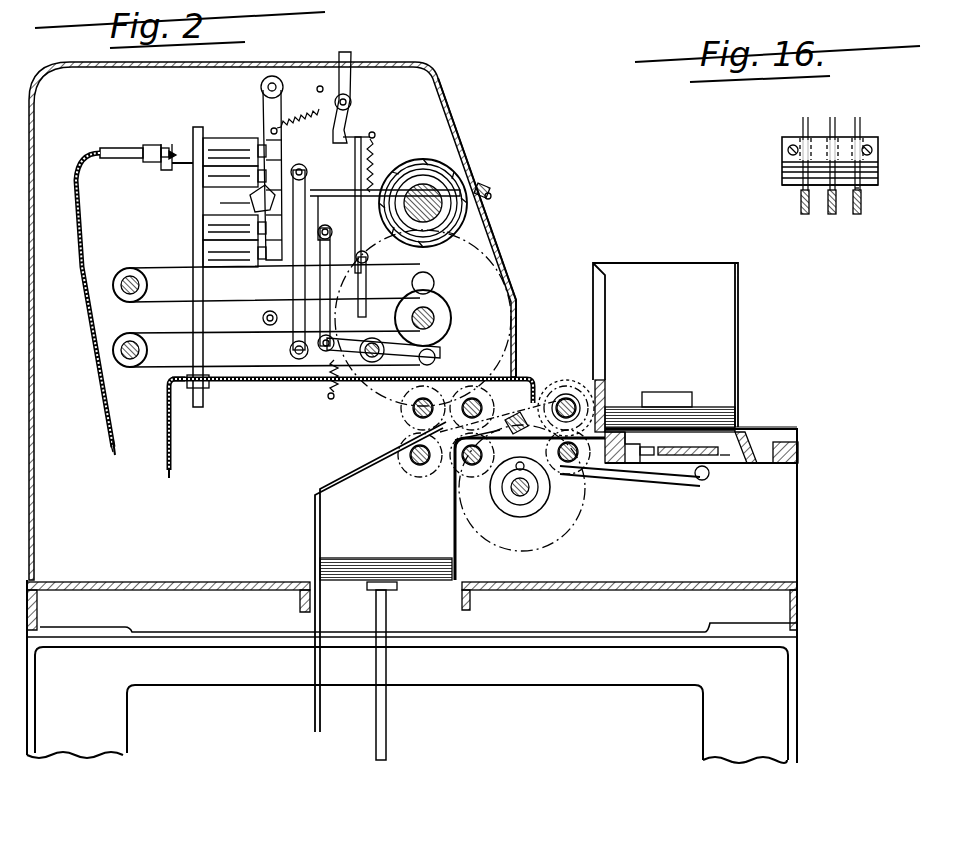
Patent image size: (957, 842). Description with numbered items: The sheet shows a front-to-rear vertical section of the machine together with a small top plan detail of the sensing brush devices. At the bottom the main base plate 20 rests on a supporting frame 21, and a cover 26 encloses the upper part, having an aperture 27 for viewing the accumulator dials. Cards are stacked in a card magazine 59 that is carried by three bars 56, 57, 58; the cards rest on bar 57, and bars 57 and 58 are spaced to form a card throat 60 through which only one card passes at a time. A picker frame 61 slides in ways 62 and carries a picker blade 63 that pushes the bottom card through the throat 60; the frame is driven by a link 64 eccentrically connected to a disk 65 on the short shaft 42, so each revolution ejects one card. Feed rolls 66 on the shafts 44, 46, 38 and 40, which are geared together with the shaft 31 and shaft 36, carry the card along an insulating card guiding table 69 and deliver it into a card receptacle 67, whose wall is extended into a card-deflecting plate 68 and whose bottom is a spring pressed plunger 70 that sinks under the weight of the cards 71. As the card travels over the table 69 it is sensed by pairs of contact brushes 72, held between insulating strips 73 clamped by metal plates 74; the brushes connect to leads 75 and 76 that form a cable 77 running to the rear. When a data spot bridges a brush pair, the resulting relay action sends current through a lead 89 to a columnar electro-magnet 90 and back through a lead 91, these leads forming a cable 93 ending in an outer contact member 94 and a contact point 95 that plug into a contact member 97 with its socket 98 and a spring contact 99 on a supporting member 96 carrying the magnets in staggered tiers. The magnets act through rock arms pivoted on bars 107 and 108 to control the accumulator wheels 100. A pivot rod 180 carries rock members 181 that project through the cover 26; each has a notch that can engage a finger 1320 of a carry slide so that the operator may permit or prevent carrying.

In FIG. 2, the main base plate 20 is at (800, 592).
In FIG. 2, the supporting frame 21 is at (412, 693).
In FIG. 2, the cover 26 is at (500, 236).
In FIG. 2, the aperture 27 is at (482, 185).
In FIG. 2, the shaft 31 is at (428, 462).
In FIG. 2, the shaft 36 is at (410, 406).
In FIG. 2, the shaft 38 is at (470, 398).
In FIG. 2, the shaft 40 is at (478, 465).
In FIG. 2, the short shaft 42 is at (516, 496).
In FIG. 2, the shaft 44 is at (560, 394).
In FIG. 2, the shaft 46 is at (570, 462).
In FIG. 2, the bar 56 is at (799, 452).
In FIG. 2, the bar 57 is at (616, 466).
In FIG. 2, the bar 58 is at (605, 384).
In FIG. 2, the card magazine 59 is at (738, 328).
In FIG. 2, the card throat 60 is at (568, 398).
In FIG. 2, the picker frame 61 is at (726, 460).
In FIG. 2, the ways 62 is at (652, 458).
In FIG. 2, the picker blade 63 is at (748, 452).
In FIG. 2, the link 64 is at (670, 482).
In FIG. 2, the disk 65 is at (545, 500).
In FIG. 2, the feed rolls 66 is at (552, 392).
In FIG. 2, the card receptacle 67 is at (485, 509).
In FIG. 2, the card-deflecting plate 68 is at (366, 468).
In FIG. 2, the card guiding table 69 is at (500, 434).
In FIG. 2, the spring pressed plunger 70 is at (392, 592).
In FIG. 2, the cards 71 is at (400, 557).
In FIG. 2, the contact brushes 72 is at (505, 415).
In FIG. 16, the contact brushes 72 is at (803, 125).
In FIG. 2, the strips 73 is at (528, 428).
In FIG. 16, the strips 73 is at (880, 170).
In FIG. 2, the metal plates 74 is at (530, 438).
In FIG. 16, the metal plates 74 is at (782, 166).
In FIG. 2, the lead 75 is at (165, 474).
In FIG. 16, the lead 75 is at (882, 186).
In FIG. 2, the lead 76 is at (173, 474).
In FIG. 16, the lead 76 is at (852, 200).
In FIG. 2, the cable 77 is at (292, 384).
In FIG. 16, the cable 77 is at (864, 202).
In FIG. 2, the lead 89 is at (114, 448).
In FIG. 2, the columnar electro-magnet 90 is at (232, 143).
In FIG. 2, the lead 91 is at (110, 451).
In FIG. 2, the cable 93 is at (88, 300).
In FIG. 2, the outer contact member 94 is at (128, 148).
In FIG. 2, the contact point 95 is at (166, 155).
In FIG. 2, the supporting member 96 is at (197, 210).
In FIG. 2, the contact member 97 is at (166, 168).
In FIG. 2, the socket 98 is at (148, 160).
In FIG. 2, the spring contact 99 is at (175, 160).
In FIG. 2, the accumulator wheels 100 is at (423, 165).
In FIG. 2, the bar 107 is at (261, 86).
In FIG. 2, the bar 108 is at (263, 318).
In FIG. 2, the pivot rod 180 is at (352, 100).
In FIG. 2, the rock members 181 is at (338, 118).
In FIG. 2, the finger 1320 is at (357, 140).